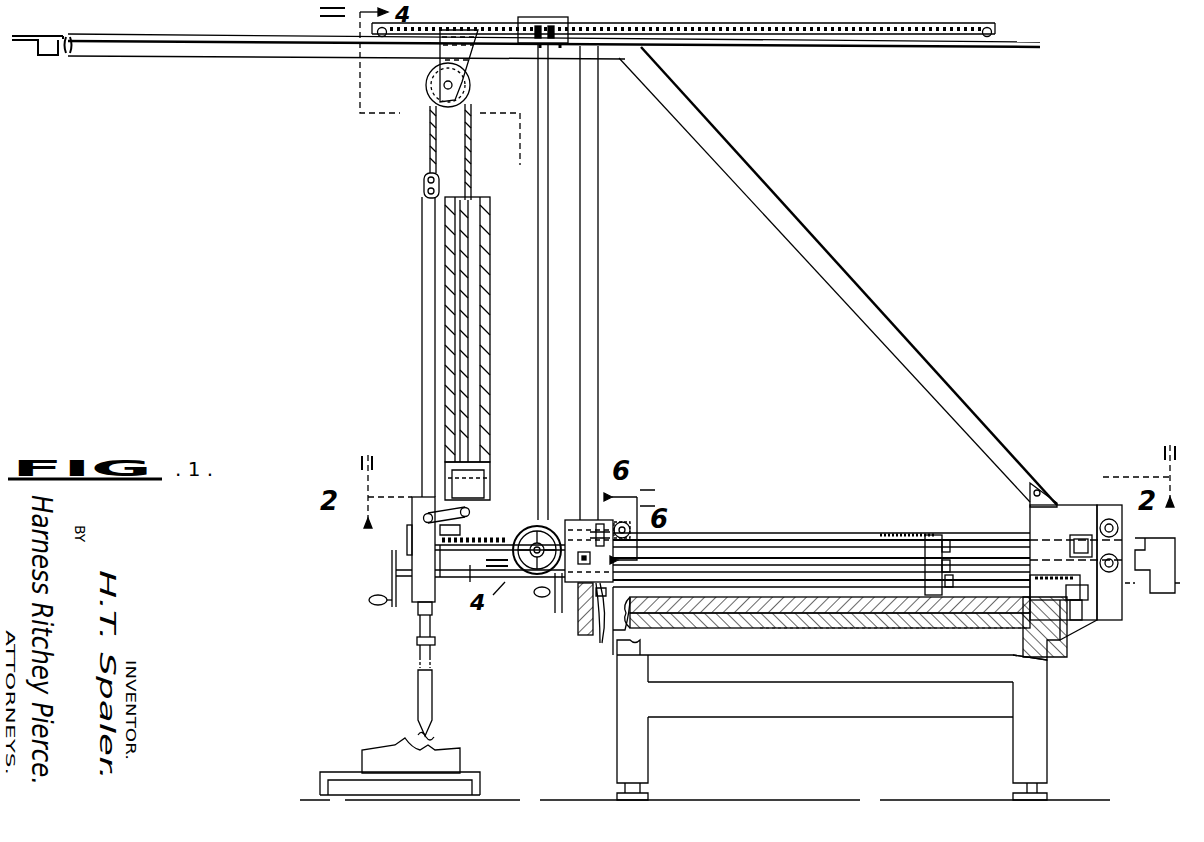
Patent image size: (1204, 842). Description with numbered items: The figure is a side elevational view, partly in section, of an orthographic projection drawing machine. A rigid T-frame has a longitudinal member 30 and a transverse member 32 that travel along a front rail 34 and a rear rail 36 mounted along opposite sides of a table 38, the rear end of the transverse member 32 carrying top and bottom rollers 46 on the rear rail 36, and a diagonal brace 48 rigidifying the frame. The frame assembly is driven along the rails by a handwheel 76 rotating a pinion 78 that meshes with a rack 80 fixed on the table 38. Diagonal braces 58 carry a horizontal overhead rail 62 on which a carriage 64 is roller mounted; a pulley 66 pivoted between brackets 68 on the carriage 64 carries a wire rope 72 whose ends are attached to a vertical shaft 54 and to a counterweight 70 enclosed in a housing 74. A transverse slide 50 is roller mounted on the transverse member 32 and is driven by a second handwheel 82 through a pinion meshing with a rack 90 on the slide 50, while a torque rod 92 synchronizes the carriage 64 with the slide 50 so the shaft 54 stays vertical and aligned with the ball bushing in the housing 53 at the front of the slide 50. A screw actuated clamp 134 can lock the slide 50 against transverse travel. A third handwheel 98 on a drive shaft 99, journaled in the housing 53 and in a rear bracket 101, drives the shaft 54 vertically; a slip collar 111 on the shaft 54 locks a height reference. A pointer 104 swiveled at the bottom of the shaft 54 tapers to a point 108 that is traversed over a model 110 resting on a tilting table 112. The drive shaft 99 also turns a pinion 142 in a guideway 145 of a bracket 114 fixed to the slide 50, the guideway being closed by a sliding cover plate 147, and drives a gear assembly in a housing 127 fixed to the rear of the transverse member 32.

The horizontal overhead rail 62 is at (160, 60).
The carriage 64 is at (834, 31).
The brackets 68 is at (445, 50).
The pulley 66 is at (446, 102).
The wire rope 72 is at (470, 176).
The housing 74 is at (490, 206).
The torque rod 92 is at (538, 250).
The diagonal braces 58 is at (800, 242).
The vertical shaft 54 is at (424, 320).
The counterweight 70 is at (478, 460).
The housing 53 is at (412, 538).
The third handwheel 98 is at (390, 578).
The second handwheel 82 is at (515, 554).
The drive shaft 99 is at (465, 580).
The rack 90 is at (484, 534).
The handwheel 76 is at (555, 600).
The transverse slide 50 is at (484, 496).
The screw actuated clamp 134 is at (632, 534).
The front rail 34 is at (660, 580).
The transverse member 32 is at (790, 550).
The longitudinal member 30 is at (578, 626).
The rack 80 is at (598, 635).
The pinion 78 is at (652, 630).
The pinion 142 is at (905, 628).
The table 38 is at (1063, 638).
The housing 127 is at (1025, 635).
The bracket 114 is at (930, 536).
The cover plate 147 is at (944, 542).
The guideway 145 is at (945, 571).
The diagonal brace 48 is at (1038, 554).
The bracket 101 is at (1157, 560).
The top and bottom rollers 46 is at (1104, 590).
The rear rail 36 is at (1105, 615).
The slip collar 111 is at (417, 638).
The pointer 104 is at (411, 684).
The point 108 is at (418, 737).
The model 110 is at (443, 754).
The tilting table 112 is at (482, 786).